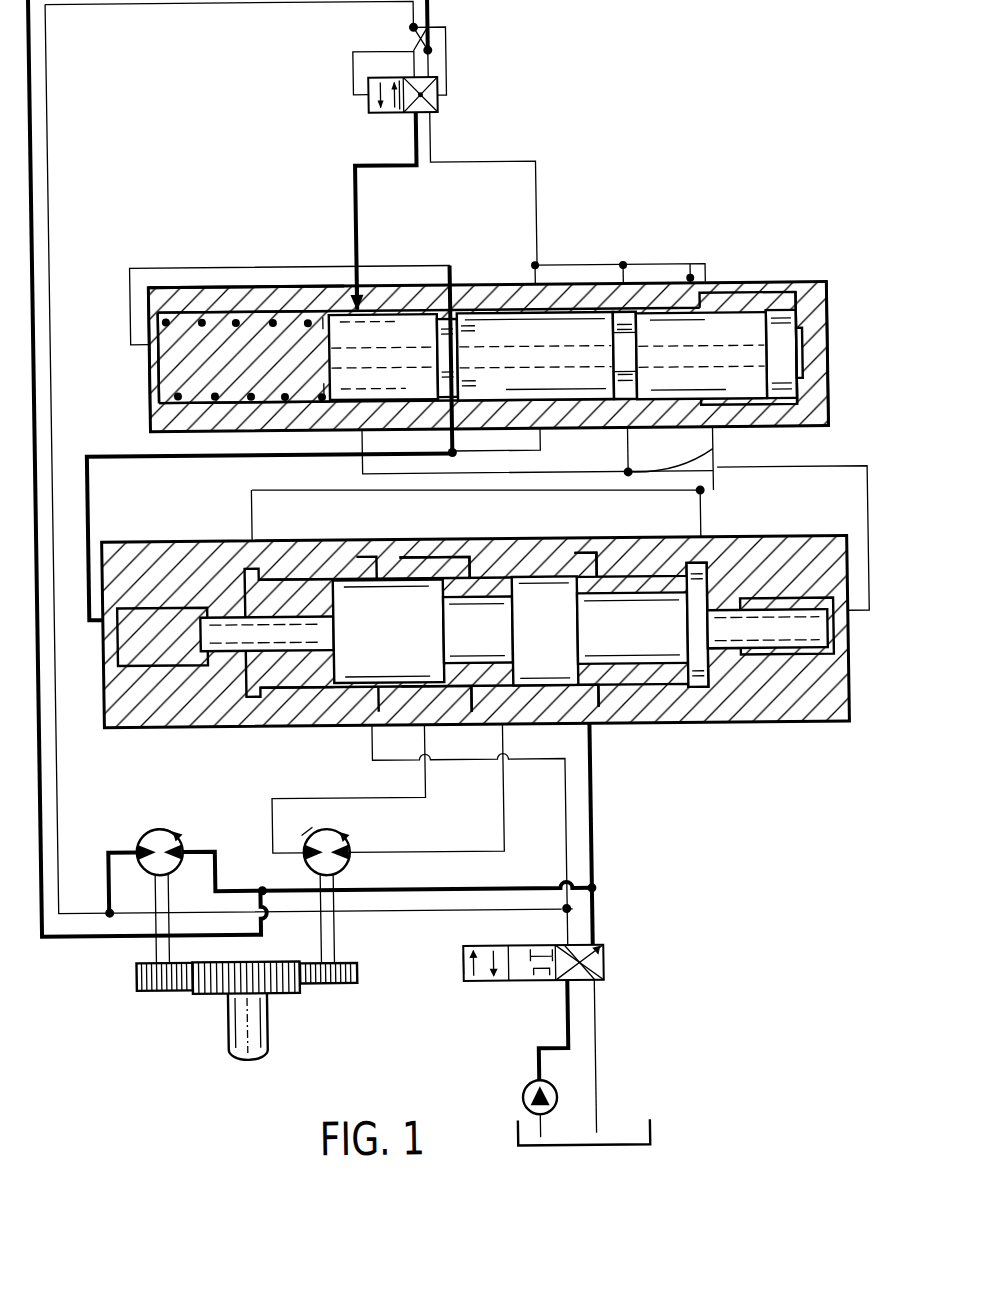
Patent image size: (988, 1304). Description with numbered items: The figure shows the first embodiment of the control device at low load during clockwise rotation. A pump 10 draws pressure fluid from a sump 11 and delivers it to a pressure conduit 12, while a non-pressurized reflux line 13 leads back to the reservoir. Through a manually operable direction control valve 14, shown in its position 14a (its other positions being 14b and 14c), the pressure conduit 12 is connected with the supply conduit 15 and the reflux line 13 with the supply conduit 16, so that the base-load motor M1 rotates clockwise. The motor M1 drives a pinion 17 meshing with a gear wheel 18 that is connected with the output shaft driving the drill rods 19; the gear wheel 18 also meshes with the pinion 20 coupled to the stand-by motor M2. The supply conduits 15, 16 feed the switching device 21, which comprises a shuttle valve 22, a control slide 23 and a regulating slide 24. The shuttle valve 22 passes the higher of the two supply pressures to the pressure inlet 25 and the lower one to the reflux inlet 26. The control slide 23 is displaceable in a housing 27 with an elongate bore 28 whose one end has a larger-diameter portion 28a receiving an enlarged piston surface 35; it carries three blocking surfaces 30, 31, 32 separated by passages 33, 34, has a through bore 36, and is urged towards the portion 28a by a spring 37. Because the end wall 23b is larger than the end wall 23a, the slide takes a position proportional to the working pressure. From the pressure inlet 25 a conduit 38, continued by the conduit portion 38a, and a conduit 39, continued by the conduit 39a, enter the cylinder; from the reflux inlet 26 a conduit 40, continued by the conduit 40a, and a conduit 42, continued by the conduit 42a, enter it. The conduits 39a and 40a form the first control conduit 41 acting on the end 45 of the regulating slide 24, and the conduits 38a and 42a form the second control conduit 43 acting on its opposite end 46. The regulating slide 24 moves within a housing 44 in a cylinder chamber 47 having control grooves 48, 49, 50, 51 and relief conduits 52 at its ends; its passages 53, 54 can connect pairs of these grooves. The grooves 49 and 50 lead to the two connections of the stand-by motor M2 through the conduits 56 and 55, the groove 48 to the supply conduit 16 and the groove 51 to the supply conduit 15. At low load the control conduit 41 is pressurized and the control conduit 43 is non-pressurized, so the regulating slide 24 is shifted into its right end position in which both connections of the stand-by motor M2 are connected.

The pump 10 is at (506, 1098).
The sump 11 is at (635, 1133).
The pressure conduit 12 is at (552, 1013).
The reflux line 13 is at (585, 1028).
The direction control valve 14 is at (599, 944).
The valve position 14a is at (591, 965).
The valve position b 14b is at (534, 955).
The valve position c 14c is at (449, 971).
The supply conduit 15 is at (432, 899).
The supply conduit 16 is at (359, 916).
The pinion 17 is at (120, 986).
The gear wheel 18 is at (200, 997).
The drill rods 19 is at (251, 1039).
The pinion 20 is at (343, 988).
The switching device 21 is at (163, 160).
The shuttle valve 22 is at (436, 111).
The control slide 23 is at (684, 289).
The end wall 23a is at (318, 303).
The end wall 23b is at (818, 290).
The regulating slide 24 is at (604, 550).
The pressure inlet 25 is at (349, 270).
The reflux inlet 26 is at (531, 270).
The housing 27 is at (172, 302).
The bore 28 is at (280, 303).
The bore portion 28a is at (733, 290).
The blocking surface 30 is at (408, 304).
The blocking surface 31 is at (487, 317).
The blocking surface 32 is at (663, 289).
The passage 33 is at (456, 391).
The passage 34 is at (624, 399).
The piston surface 35 is at (778, 290).
The bore 36 is at (585, 362).
The spring 37 is at (224, 297).
The conduit 38 is at (376, 303).
The conduit portion 38a is at (356, 480).
The conduit 39 is at (456, 304).
The conduit 39a is at (430, 406).
The conduit 40 is at (538, 312).
The conduit 40a is at (536, 447).
The first control conduit 41 is at (81, 481).
The conduit 42 is at (626, 289).
The conduit 42a is at (706, 456).
The second control conduit 43 is at (858, 505).
The housing 44 is at (130, 563).
The end 45 is at (180, 569).
The end 46 is at (831, 638).
The cylinder chamber 47 is at (284, 570).
The control groove 48 is at (354, 556).
The control groove 49 is at (422, 557).
The control groove 50 is at (494, 558).
The control groove 51 is at (584, 558).
The relief conduits 52 is at (244, 514).
The passage 53 is at (510, 558).
The passage 54 is at (654, 559).
The conduit 55 is at (379, 854).
The conduit 56 is at (285, 800).
The base-load motor M1 is at (183, 849).
The stand-by motor M2 is at (313, 834).